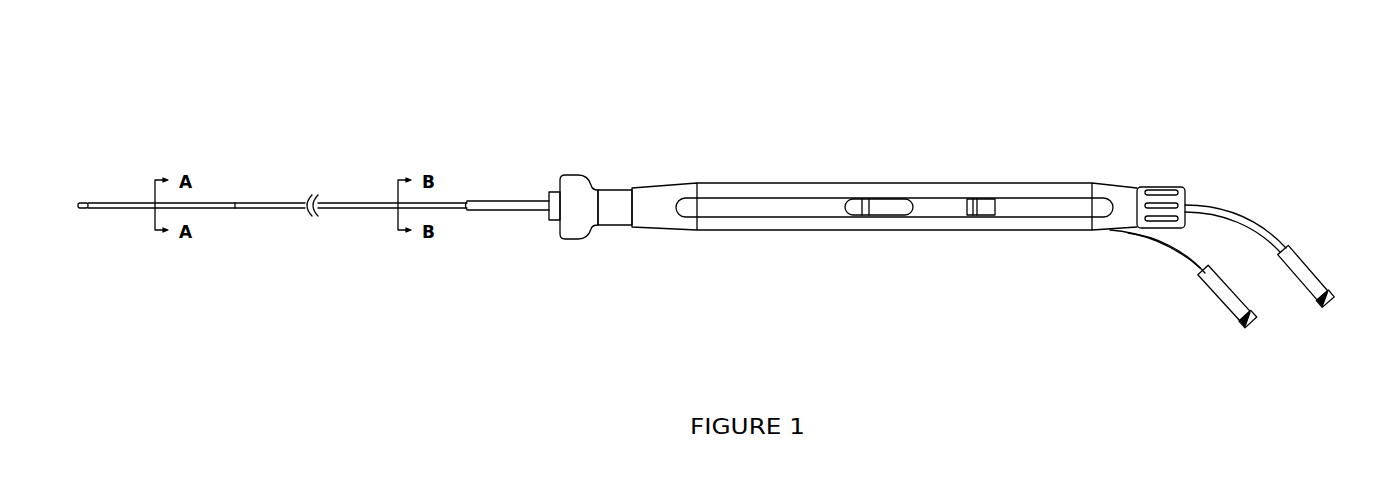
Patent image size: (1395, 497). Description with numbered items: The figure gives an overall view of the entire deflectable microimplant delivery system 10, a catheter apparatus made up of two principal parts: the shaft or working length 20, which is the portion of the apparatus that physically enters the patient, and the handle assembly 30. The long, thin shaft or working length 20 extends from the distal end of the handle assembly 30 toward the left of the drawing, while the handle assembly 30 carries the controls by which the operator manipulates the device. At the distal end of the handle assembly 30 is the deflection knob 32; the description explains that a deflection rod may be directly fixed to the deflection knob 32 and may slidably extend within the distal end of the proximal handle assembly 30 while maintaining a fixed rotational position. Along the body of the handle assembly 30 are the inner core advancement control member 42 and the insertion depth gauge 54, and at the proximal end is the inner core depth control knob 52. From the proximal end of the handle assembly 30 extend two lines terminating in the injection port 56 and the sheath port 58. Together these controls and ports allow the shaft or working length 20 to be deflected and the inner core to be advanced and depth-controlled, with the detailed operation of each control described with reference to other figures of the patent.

The deflectable microimplant delivery system 10 is at (560, 307).
The shaft or working length 20 is at (270, 208).
The handle assembly 30 is at (766, 183).
The deflection knob 32 is at (582, 172).
The inner core advancement control member 42 is at (880, 197).
The inner core depth control knob 52 is at (1160, 186).
The insertion depth gauge 54 is at (983, 197).
The injection port 56 is at (1312, 268).
The sheath port 58 is at (1213, 297).